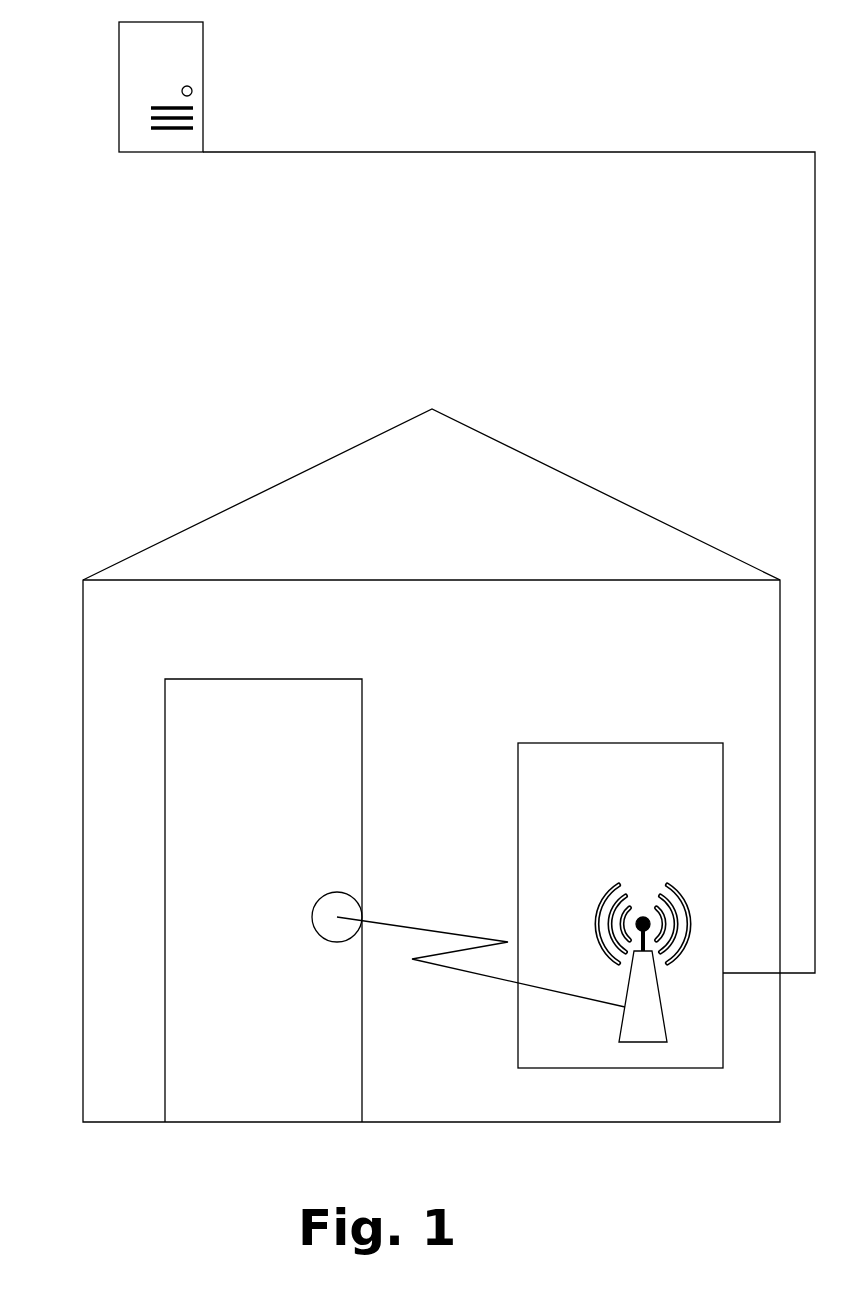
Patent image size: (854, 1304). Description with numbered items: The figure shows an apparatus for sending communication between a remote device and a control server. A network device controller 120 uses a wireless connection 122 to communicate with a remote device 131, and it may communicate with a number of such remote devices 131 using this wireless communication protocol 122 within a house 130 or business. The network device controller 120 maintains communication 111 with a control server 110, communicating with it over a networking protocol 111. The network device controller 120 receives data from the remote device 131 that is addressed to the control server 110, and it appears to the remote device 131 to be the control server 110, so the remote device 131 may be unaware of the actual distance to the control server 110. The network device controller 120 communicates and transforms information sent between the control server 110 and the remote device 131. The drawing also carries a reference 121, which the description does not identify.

The control server 110 is at (158, 54).
The networking protocol 111 is at (683, 152).
The network device controller 120 is at (620, 905).
The wireless transceiver antenna 121 is at (650, 1005).
The wireless connection 122 is at (490, 973).
The house 130 is at (302, 610).
The remote device 131 is at (337, 908).